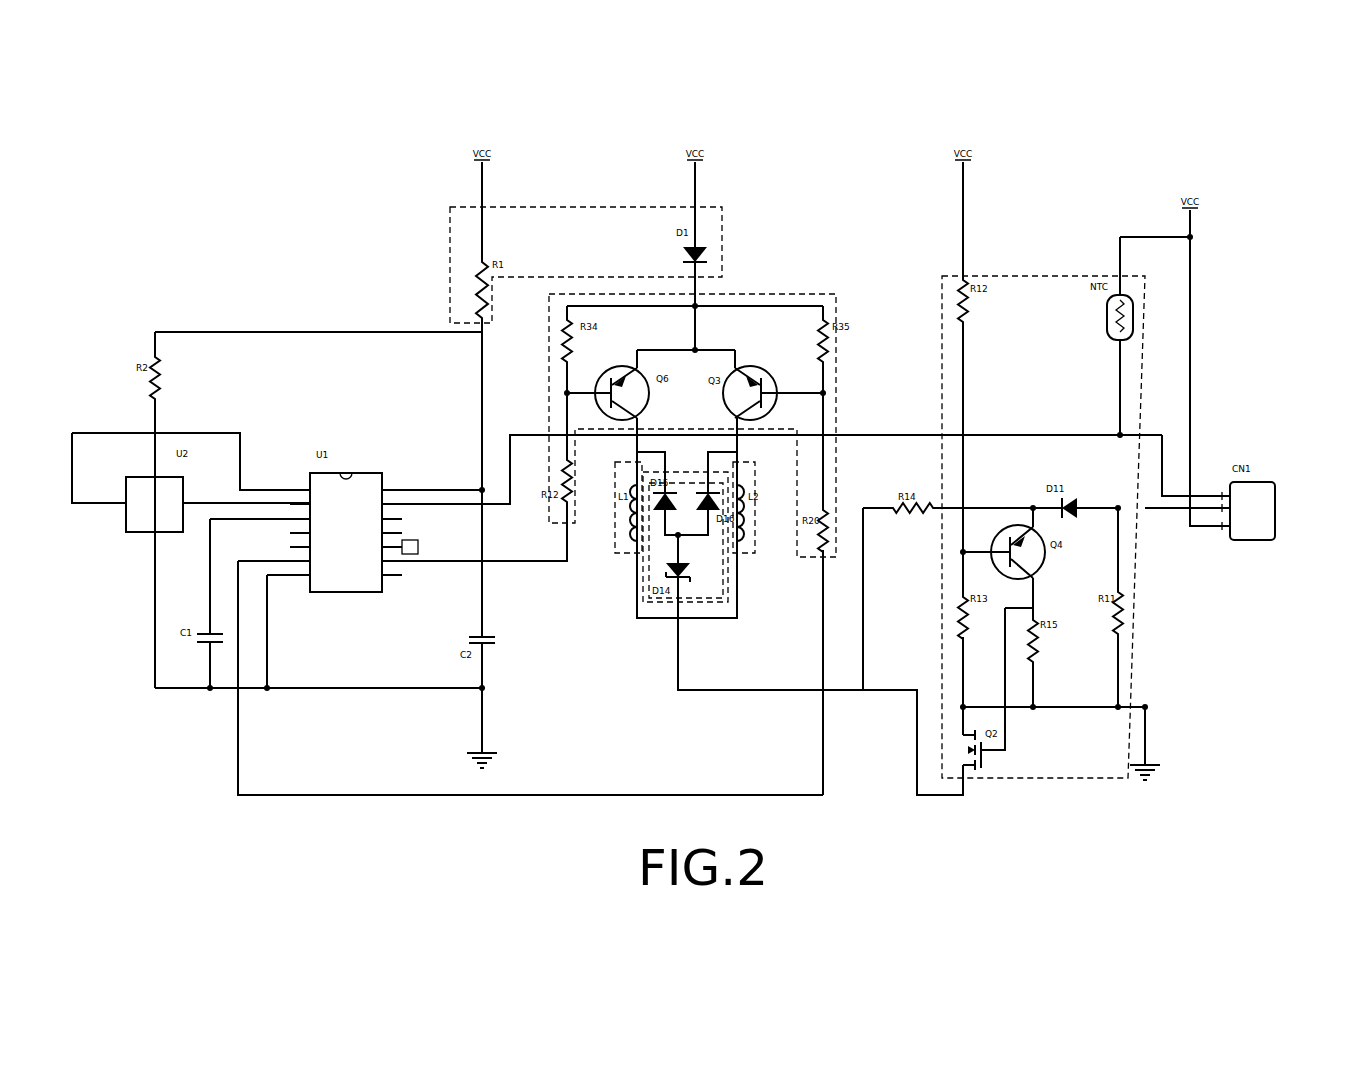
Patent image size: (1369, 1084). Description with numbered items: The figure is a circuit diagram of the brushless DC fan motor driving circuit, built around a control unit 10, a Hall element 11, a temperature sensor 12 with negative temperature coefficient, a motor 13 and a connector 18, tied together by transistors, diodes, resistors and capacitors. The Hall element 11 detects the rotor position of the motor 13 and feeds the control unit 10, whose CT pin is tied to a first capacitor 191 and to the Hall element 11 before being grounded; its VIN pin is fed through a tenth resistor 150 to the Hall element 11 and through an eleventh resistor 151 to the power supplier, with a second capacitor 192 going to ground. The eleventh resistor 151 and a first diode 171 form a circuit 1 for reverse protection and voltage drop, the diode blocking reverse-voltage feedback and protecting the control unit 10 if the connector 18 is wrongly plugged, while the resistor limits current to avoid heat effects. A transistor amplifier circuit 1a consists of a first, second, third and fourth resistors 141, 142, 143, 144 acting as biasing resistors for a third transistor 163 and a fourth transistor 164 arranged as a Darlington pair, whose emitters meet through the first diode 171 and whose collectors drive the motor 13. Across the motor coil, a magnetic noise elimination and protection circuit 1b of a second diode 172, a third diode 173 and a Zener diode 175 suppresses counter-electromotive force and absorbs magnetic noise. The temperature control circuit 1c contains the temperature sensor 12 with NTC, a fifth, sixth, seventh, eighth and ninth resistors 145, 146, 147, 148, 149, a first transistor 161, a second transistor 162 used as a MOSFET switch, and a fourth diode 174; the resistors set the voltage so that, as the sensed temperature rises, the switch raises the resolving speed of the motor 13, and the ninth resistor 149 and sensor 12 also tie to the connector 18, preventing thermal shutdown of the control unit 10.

The circuit for reverse protection and voltage drop 1 is at (536, 202).
The transistor amplifier circuit 1a is at (757, 289).
The magnetic noise elimination and protection circuit 1b is at (655, 613).
The temperature control circuit 1c is at (1043, 272).
The control unit 10 is at (349, 466).
The Hall element 11 is at (118, 530).
The temperature sensor with negative temperature coefficient 12 is at (1104, 328).
The motor 13 is at (611, 524).
The connector 18 is at (1281, 498).
The first resistor 141 is at (824, 505).
The second resistor 142 is at (836, 320).
The third resistor 143 is at (556, 330).
The fourth resistor 144 is at (560, 468).
The fifth resistor 145 is at (958, 612).
The sixth resistor 146 is at (931, 500).
The seventh resistor 147 is at (967, 285).
The eighth resistor 148 is at (1038, 655).
The ninth resistor 149 is at (1122, 630).
The tenth resistor 150 is at (160, 396).
The eleventh resistor 151 is at (478, 270).
The first transistor 161 is at (1009, 526).
The second transistor 162 is at (984, 758).
The third transistor 163 is at (743, 361).
The fourth transistor 164 is at (609, 361).
The first diode 171 is at (700, 240).
The second diode 172 is at (710, 512).
The third diode 173 is at (658, 512).
The fourth diode 174 is at (1068, 496).
The Zener diode 175 is at (680, 580).
The first capacitor 191 is at (206, 646).
The second capacitor 192 is at (487, 646).